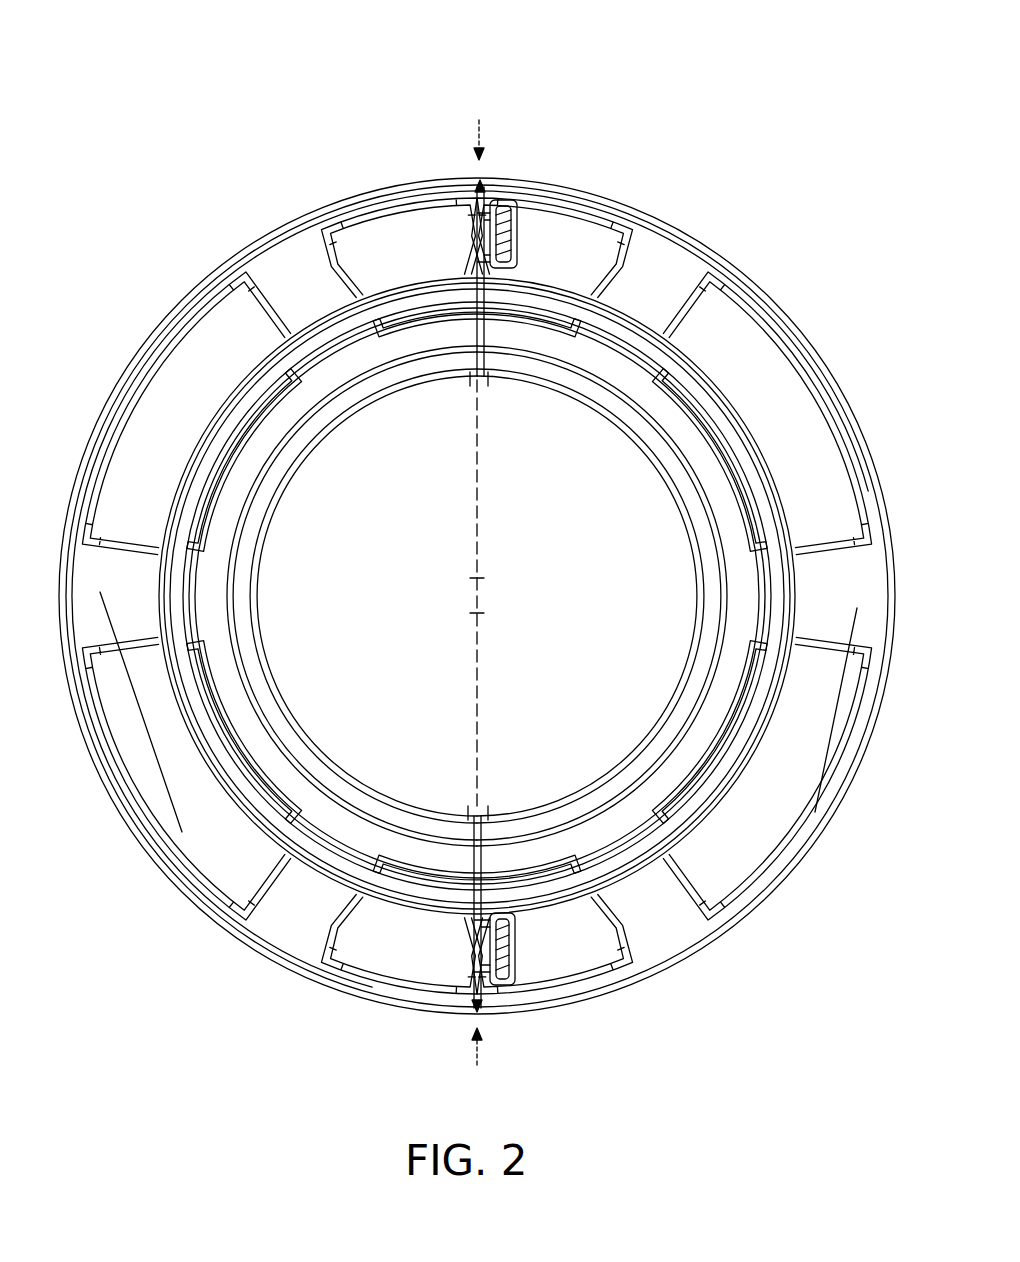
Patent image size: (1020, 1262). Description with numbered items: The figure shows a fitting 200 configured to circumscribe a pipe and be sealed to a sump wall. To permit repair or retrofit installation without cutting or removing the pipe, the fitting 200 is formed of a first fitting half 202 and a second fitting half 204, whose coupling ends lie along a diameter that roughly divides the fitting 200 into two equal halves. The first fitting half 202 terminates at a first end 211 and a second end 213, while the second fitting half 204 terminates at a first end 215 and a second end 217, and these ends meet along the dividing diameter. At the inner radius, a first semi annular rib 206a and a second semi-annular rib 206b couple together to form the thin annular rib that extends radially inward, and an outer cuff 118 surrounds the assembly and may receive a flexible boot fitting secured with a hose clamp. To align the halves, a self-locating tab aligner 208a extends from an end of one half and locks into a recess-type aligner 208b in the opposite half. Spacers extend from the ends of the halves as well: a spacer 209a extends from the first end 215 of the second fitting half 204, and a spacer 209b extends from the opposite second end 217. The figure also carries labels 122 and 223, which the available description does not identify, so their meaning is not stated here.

The fitting 200 is at (777, 92).
The first fitting half 202 is at (205, 241).
The second fitting half 204 is at (518, 557).
The first semi annular rib 206a is at (292, 693).
The second semi-annular rib 206b is at (600, 770).
The self-locating tab aligner 208a is at (477, 233).
The recess-type aligner 208b is at (515, 235).
The spacer 209a is at (473, 857).
The spacer 209b is at (492, 335).
The first end of the first fitting half 211 is at (472, 382).
The second end of the first fitting half 213 is at (462, 806).
The first end of the second fitting half 215 is at (486, 382).
The second end of the second fitting half 217 is at (490, 806).
The outer cuff 118 is at (340, 838).
The pressing direction 122 is at (480, 593).
The support rib 223 is at (300, 907).